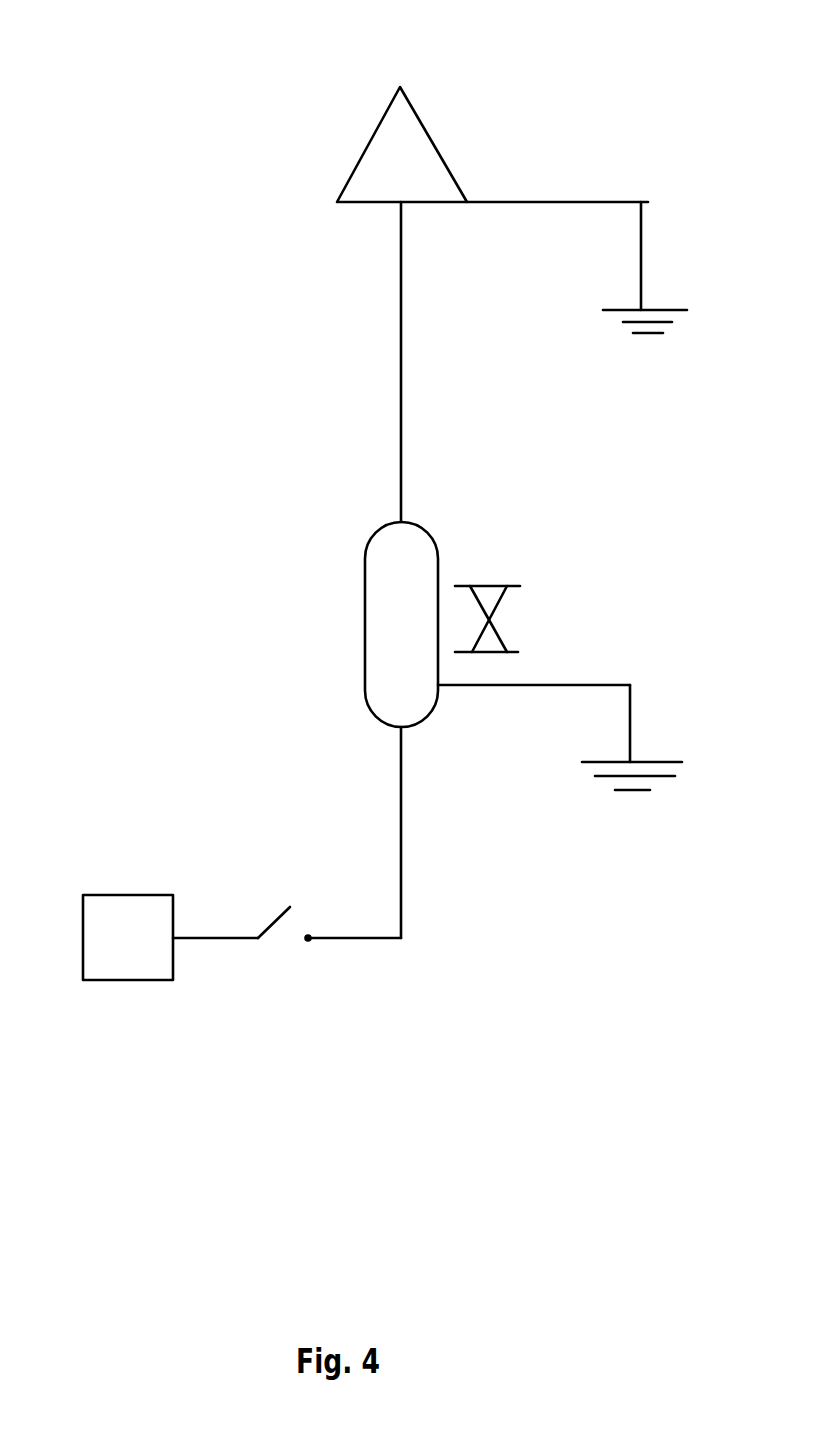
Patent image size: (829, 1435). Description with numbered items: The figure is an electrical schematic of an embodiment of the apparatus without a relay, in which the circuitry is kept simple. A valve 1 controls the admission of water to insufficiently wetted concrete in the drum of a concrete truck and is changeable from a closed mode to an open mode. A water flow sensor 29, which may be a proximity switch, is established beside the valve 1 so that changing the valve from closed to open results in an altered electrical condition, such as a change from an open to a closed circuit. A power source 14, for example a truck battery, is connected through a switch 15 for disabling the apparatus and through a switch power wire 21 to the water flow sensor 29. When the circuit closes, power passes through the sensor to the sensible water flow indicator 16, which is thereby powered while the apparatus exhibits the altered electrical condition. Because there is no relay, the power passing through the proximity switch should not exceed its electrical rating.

The sensible water flow indicator 16 is at (359, 134).
The water flow sensor 29 is at (437, 540).
The valve 1 is at (512, 572).
The switch power wire 21 is at (403, 778).
The power source 14 is at (128, 980).
The switch 15 is at (282, 962).